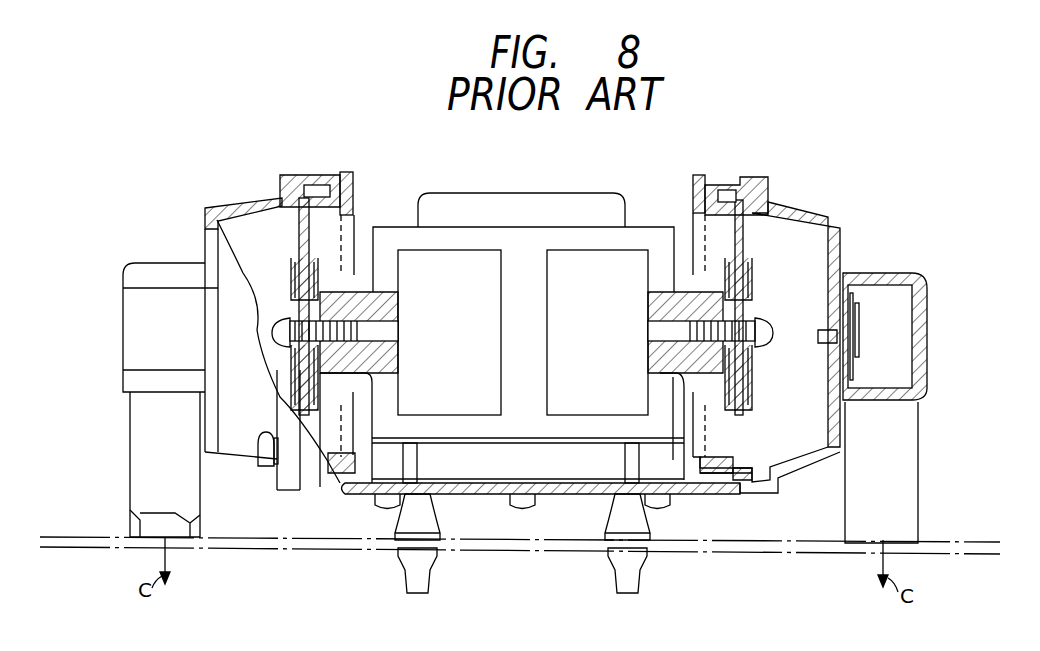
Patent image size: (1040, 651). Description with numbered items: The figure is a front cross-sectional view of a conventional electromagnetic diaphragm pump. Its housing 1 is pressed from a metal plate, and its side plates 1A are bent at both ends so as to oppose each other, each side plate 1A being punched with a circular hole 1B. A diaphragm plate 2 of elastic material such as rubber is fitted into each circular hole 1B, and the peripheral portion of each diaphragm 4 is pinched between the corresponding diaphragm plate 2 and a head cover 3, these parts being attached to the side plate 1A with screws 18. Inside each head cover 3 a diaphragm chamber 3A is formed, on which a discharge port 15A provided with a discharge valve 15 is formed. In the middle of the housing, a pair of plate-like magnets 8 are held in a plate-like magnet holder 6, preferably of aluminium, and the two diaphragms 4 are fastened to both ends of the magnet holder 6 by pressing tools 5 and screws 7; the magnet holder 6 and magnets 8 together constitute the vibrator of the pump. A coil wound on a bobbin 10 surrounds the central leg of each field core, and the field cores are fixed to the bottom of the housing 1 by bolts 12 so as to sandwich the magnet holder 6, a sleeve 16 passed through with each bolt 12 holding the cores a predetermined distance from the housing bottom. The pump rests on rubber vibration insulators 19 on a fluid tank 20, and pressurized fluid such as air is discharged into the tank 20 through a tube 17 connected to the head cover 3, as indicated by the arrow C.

The housing 1 is at (698, 500).
The side plate 1A is at (345, 172).
The circular hole 1B is at (354, 210).
The diaphragm plate 2 is at (305, 180).
The head cover 3 is at (205, 228).
The diaphragm chamber 3A is at (812, 413).
The diaphragm 4 is at (299, 240).
The pressing tool 5 is at (293, 262).
The magnet holder 6 is at (660, 227).
The screw 7 is at (280, 325).
The magnet 8 is at (413, 258).
The bobbin 10 is at (472, 210).
The bolt 12 is at (385, 510).
The discharge valve 15 is at (856, 295).
The discharge port 15A is at (862, 358).
The sleeve 16 is at (360, 483).
The tube 17 is at (143, 422).
The screw 18 is at (266, 464).
The rubber vibration insulator 19 is at (430, 568).
The fluid tank 20 is at (985, 540).